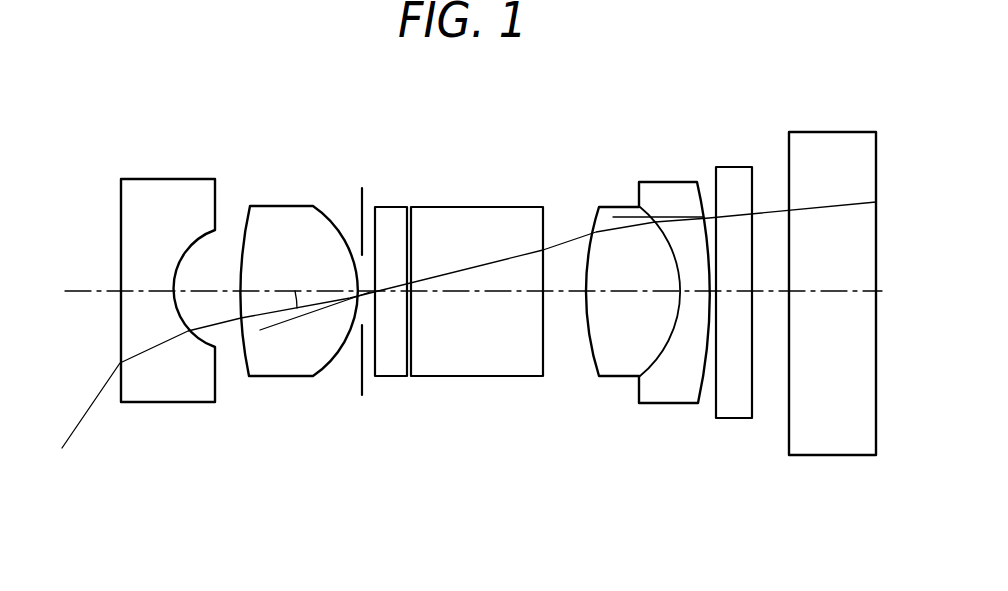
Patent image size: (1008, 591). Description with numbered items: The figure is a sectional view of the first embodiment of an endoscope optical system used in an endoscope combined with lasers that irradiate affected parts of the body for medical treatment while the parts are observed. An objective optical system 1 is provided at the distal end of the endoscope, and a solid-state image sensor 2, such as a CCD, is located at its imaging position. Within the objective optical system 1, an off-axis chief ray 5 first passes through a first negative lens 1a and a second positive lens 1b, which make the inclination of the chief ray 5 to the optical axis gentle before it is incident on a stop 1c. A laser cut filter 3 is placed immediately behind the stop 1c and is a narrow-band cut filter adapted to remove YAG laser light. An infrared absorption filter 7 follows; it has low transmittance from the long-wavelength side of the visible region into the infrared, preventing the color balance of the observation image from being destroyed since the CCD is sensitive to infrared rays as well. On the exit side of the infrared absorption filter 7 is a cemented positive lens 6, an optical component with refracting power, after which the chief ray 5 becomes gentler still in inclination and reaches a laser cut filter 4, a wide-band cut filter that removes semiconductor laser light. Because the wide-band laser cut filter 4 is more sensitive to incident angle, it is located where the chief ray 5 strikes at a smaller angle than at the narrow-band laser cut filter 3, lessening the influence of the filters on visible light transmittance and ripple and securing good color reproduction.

The objective optical system 1 is at (150, 485).
The first negative lens 1a is at (161, 185).
The second positive lens 1b is at (260, 207).
The stop 1c is at (360, 190).
The solid-state image sensor 2 is at (876, 152).
The laser cut filter 3 is at (390, 377).
The laser cut filter 4 is at (737, 168).
The off-axis chief ray 5 is at (75, 428).
The cemented positive lens 6 is at (703, 421).
The infrared absorption filter 7 is at (483, 377).